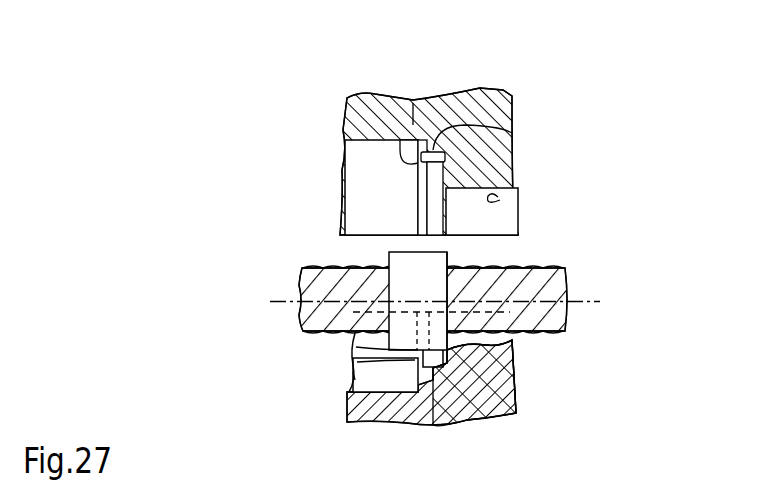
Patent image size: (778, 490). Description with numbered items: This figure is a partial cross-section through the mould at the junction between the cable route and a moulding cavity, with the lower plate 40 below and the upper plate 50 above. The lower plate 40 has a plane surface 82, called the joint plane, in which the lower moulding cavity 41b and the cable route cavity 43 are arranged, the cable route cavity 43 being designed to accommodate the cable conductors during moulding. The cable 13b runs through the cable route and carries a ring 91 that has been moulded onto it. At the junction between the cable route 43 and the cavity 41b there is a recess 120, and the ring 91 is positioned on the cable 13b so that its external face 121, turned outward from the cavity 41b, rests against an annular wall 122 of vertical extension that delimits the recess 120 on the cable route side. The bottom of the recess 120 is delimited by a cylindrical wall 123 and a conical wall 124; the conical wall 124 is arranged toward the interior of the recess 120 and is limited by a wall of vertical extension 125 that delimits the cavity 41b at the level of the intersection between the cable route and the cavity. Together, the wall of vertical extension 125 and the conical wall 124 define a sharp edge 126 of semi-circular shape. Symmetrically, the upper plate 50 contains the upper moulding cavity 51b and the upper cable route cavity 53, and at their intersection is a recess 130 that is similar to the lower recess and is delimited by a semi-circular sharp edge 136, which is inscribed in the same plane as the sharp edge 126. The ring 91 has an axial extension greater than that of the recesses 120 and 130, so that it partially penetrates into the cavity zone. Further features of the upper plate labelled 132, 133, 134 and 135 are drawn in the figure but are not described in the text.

The upper plate 50 is at (419, 118).
The recess 130 is at (507, 123).
The upper moulding cavity 51b is at (345, 152).
The sharp edge 136 is at (421, 196).
The locking pin 134 is at (405, 152).
The insert 133 is at (450, 174).
The recess 132 is at (450, 216).
The cable route cavity 53 is at (500, 200).
The bore 135 is at (413, 103).
The plane surface 82 is at (567, 275).
The cable 13b is at (322, 268).
The ring 91 is at (386, 254).
The external face 121 is at (450, 255).
The cable route cavity 43 is at (520, 347).
The plate 40 is at (405, 406).
The recess 120 is at (478, 418).
The lower moulding cavity 41b is at (345, 386).
The annular wall 122 is at (516, 370).
The cylindrical wall 123 is at (515, 397).
The conical wall 124 is at (356, 347).
The sharp edge 126 is at (357, 362).
The wall of vertical extension 125 is at (353, 372).